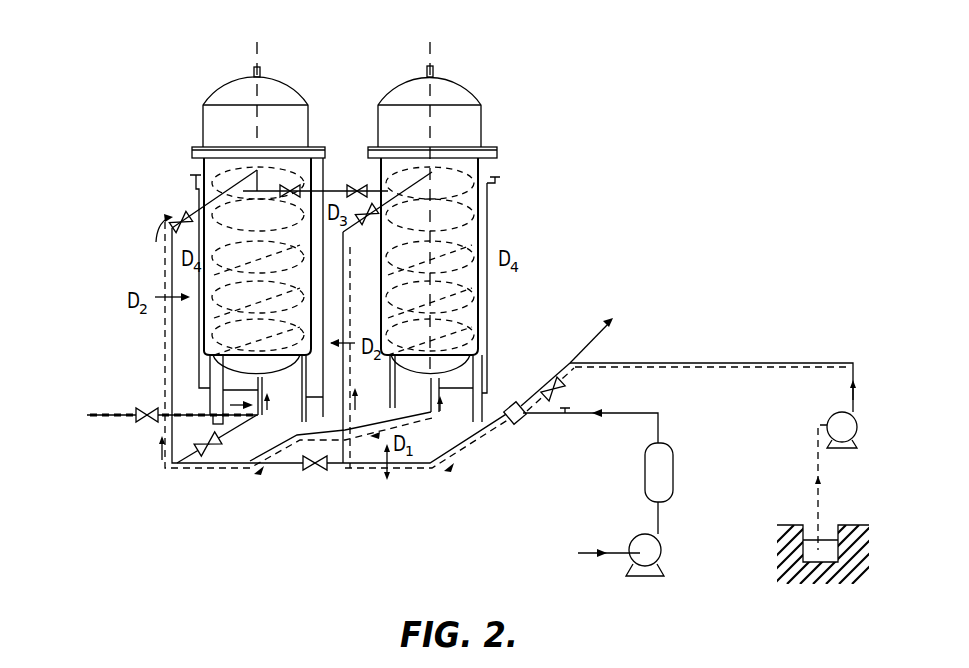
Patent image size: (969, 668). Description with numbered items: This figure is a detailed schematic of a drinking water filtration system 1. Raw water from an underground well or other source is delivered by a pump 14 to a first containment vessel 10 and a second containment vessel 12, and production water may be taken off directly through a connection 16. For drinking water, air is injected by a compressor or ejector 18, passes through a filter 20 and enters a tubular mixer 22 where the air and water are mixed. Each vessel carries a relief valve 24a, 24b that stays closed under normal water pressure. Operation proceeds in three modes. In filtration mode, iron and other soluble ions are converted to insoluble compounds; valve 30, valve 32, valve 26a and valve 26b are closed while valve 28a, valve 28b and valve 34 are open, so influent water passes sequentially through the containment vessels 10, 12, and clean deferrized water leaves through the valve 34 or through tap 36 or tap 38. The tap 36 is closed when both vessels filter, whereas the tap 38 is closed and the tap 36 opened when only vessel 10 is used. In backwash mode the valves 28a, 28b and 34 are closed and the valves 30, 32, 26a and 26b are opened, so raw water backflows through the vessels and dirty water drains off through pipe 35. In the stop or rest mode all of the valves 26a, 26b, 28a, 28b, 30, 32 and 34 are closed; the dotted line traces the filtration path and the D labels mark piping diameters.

The filtration system 1 is at (548, 46).
The first containment vessel 10 is at (470, 125).
The second containment vessel 12 is at (232, 92).
The pump 14 is at (858, 430).
The connection 16 is at (620, 321).
The compressor or ejector 18 is at (661, 550).
The filter 20 is at (674, 462).
The tubular mixer 22 is at (522, 425).
The relief valve 24a is at (262, 74).
The relief valve 24b is at (435, 74).
The valve 26a is at (305, 176).
The valve 26b is at (362, 185).
The valve 28a is at (170, 220).
The valve 28b is at (350, 235).
The valve 30 is at (318, 471).
The valve 32 is at (220, 448).
The valve 34 is at (140, 409).
The pipe 35 is at (303, 403).
The tap 36 is at (500, 176).
The tap 38 is at (190, 181).